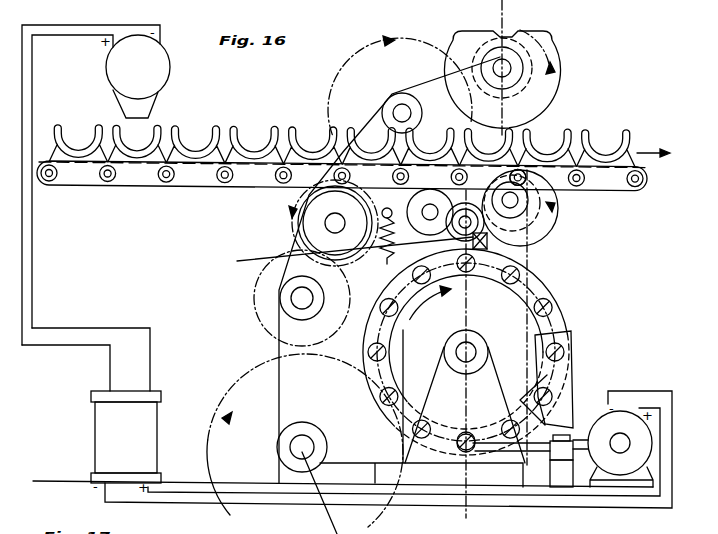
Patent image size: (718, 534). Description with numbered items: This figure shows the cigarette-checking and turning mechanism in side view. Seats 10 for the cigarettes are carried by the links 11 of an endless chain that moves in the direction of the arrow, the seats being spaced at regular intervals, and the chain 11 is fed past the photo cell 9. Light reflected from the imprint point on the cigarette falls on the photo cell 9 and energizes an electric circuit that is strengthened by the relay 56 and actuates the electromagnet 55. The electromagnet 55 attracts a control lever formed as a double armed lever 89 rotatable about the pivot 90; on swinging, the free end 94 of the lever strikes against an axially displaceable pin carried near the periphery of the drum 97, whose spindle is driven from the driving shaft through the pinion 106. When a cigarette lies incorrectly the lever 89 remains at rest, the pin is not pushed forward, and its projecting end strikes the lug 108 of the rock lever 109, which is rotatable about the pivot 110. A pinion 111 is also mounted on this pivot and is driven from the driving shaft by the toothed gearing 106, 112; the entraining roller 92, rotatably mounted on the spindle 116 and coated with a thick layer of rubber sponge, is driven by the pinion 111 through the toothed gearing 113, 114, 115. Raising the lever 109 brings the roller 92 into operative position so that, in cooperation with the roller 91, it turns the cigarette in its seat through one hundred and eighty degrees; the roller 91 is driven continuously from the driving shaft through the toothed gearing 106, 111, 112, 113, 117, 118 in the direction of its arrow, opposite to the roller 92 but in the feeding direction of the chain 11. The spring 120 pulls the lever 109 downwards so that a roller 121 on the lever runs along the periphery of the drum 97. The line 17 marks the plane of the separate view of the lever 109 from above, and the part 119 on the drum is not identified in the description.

The photo cell 9 is at (157, 72).
The seats 10 is at (173, 133).
The chain links 11 is at (148, 177).
The vertical axis 17 is at (484, 267).
The electromagnet 55 is at (617, 422).
The relay 56 is at (104, 432).
The double armed lever 89 is at (533, 460).
The pivot 90 is at (567, 437).
The roller 91 is at (613, 96).
The entraining roller 92 is at (553, 224).
The free end of lever 94 is at (463, 451).
The drum 97 is at (557, 310).
The pinion 106 is at (368, 520).
The lug 108 is at (478, 239).
The rock lever 109 is at (320, 268).
The pivot 110 is at (237, 261).
The pinion 111 is at (332, 225).
The toothed gearing 112 is at (252, 365).
The toothed gearing 113 is at (287, 207).
The toothed gearing 114 is at (372, 158).
The toothed gearing 115 is at (529, 182).
The spindle 116 is at (512, 203).
The toothed gearing 117 is at (330, 100).
The toothed gearing 118 is at (537, 52).
The clamping pad 119 is at (613, 348).
The spring 120 is at (388, 262).
The roller 121 is at (480, 236).